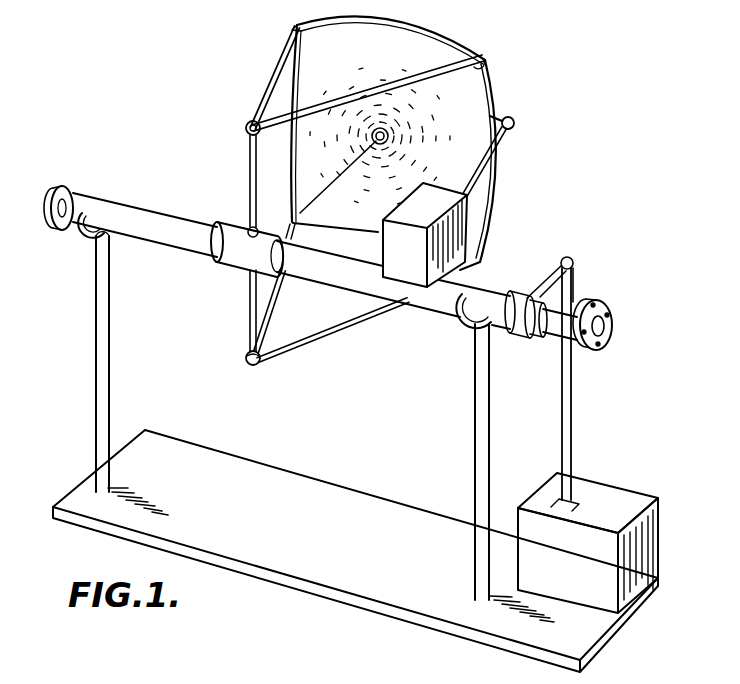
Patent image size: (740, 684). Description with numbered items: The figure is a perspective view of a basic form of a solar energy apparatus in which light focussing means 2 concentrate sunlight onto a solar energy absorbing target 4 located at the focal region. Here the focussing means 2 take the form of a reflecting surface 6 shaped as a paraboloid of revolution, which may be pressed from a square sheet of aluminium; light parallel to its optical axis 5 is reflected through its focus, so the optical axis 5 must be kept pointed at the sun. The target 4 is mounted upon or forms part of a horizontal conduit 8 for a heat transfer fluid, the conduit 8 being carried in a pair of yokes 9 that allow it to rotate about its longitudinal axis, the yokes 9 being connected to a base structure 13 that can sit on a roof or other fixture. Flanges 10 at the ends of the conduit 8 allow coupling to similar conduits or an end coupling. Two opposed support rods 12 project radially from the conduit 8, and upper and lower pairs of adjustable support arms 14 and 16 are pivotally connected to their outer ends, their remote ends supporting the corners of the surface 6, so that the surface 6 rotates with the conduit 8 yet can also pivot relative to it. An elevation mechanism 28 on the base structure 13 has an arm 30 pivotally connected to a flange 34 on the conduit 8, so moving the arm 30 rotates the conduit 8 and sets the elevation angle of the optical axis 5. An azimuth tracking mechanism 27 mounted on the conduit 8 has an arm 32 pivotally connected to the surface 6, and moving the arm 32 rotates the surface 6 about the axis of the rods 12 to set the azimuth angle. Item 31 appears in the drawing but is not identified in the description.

The light focussing means 2 is at (463, 44).
The solar energy absorbing target 4 is at (240, 219).
The optical axis 5 is at (346, 164).
The reflecting surface 6 is at (479, 115).
The conduit 8 is at (172, 228).
The yokes 9 is at (103, 357).
The flanges 10 is at (70, 188).
The support rods 12 is at (249, 152).
The base structure 13 is at (283, 520).
The upper adjustable support arms 14 is at (276, 62).
The lower adjustable support arms 16 is at (268, 292).
The azimuth tracking mechanism 27 is at (415, 273).
The elevation mechanism 28 is at (625, 504).
The arm 30 is at (572, 389).
The drive mechanism 31 is at (98, 683).
The arm 32 is at (514, 127).
The flange 34 is at (552, 268).